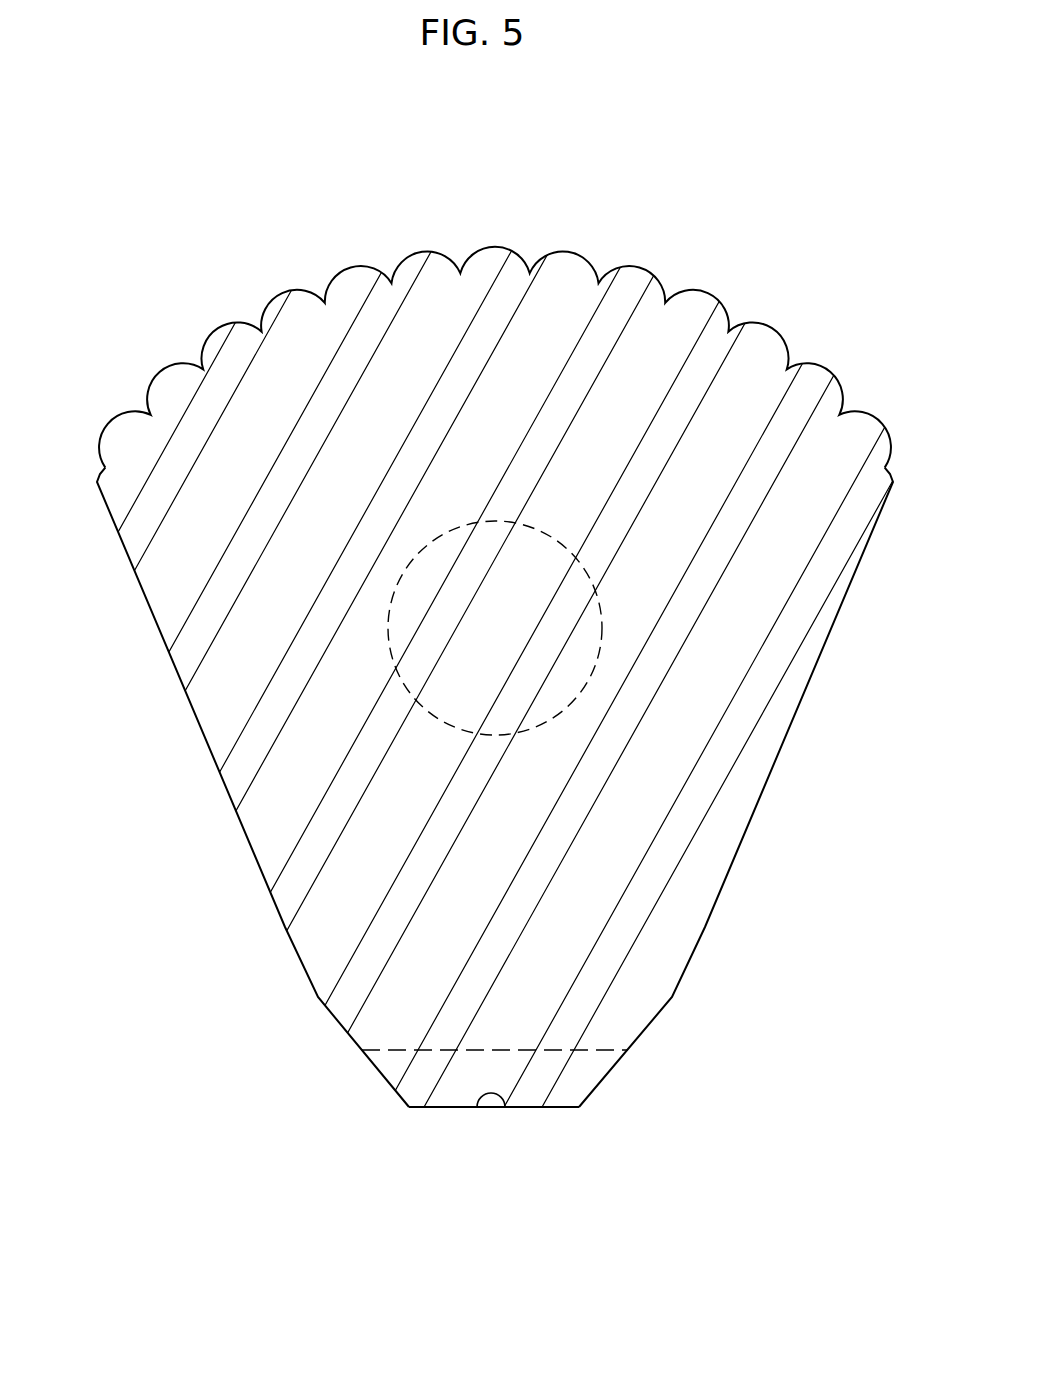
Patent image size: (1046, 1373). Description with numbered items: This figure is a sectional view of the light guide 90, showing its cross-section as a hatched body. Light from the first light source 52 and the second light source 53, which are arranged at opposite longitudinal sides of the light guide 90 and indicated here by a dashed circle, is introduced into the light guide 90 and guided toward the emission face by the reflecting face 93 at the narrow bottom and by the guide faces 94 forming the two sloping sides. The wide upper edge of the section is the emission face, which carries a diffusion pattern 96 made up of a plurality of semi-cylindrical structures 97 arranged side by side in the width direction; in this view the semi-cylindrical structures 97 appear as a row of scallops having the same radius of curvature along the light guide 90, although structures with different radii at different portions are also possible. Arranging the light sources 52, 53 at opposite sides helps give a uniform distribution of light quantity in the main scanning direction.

The light guide 90 is at (516, 657).
The reflecting face 93 is at (505, 1100).
The guide faces 94 is at (163, 643).
The diffusion pattern 96 is at (495, 292).
The semi-cylindrical structures 97 is at (468, 252).
The first light source 52 is at (650, 685).
The second light source 53 is at (595, 663).